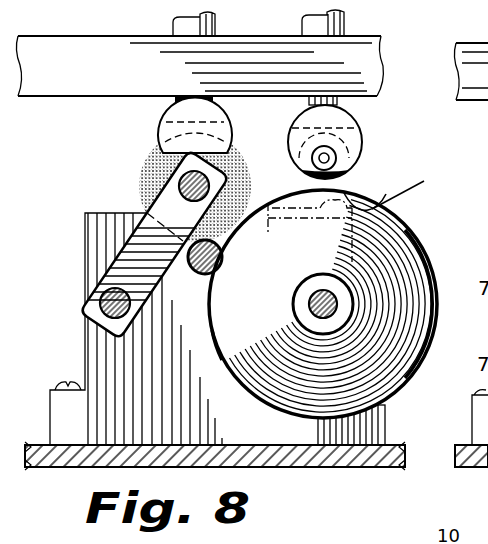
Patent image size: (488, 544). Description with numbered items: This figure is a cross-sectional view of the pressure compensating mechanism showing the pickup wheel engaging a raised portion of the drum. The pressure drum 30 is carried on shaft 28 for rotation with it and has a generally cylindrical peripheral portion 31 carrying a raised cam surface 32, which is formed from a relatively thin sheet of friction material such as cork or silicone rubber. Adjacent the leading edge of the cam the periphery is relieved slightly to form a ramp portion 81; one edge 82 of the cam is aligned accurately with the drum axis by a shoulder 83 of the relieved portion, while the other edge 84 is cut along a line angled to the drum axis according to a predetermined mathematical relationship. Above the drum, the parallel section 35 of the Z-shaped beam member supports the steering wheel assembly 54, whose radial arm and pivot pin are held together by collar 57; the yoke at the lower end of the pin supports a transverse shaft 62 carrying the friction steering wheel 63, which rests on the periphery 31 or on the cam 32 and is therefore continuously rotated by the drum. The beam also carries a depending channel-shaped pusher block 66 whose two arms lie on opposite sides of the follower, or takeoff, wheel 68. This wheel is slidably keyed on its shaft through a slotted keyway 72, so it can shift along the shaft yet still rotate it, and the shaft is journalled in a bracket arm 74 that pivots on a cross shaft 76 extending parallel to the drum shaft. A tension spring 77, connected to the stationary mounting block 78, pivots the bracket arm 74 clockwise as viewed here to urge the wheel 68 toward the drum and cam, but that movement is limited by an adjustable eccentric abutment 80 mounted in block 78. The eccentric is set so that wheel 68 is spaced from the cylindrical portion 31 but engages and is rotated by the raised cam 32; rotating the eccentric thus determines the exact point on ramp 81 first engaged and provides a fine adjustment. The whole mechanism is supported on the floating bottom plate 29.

The parallel section 35 is at (199, 57).
The collar 57 is at (346, 22).
The pusher block 66 is at (163, 117).
The follower wheel 68 is at (148, 173).
The steering wheel assembly 54 is at (372, 128).
The transverse shaft 62 is at (322, 160).
The steering wheel 63 is at (345, 182).
The shoulder 83 is at (446, 155).
The edge of the cam 82 is at (410, 186).
The ramp portion 81 is at (352, 193).
The pressure drum 30 is at (412, 219).
The slotted keyway 72 is at (188, 200).
The tension spring 77 is at (270, 231).
The stationary mounting block 78 is at (355, 243).
The eccentric abutment 80 is at (223, 263).
The shaft 28 is at (310, 304).
The peripheral portion 31 is at (436, 307).
The raised cam surface 32 is at (216, 346).
The bracket arm 74 is at (80, 306).
The cross shaft 76 is at (148, 305).
The other edge of the cam surface 84 is at (316, 422).
The bottom plate 29 is at (373, 468).